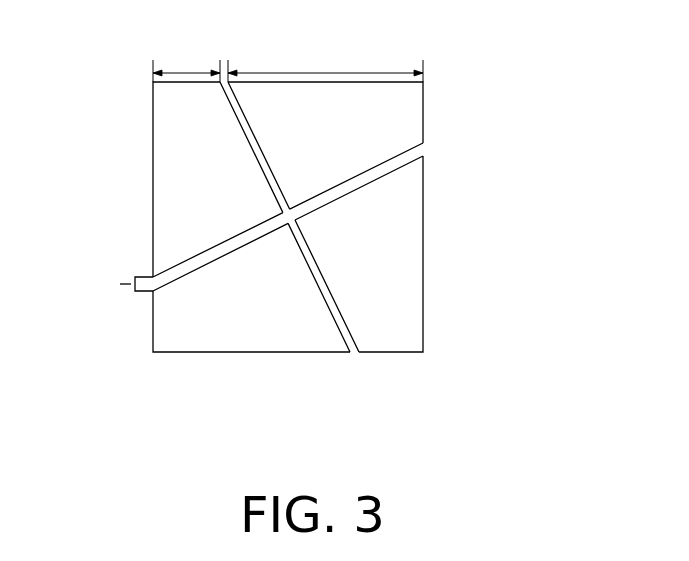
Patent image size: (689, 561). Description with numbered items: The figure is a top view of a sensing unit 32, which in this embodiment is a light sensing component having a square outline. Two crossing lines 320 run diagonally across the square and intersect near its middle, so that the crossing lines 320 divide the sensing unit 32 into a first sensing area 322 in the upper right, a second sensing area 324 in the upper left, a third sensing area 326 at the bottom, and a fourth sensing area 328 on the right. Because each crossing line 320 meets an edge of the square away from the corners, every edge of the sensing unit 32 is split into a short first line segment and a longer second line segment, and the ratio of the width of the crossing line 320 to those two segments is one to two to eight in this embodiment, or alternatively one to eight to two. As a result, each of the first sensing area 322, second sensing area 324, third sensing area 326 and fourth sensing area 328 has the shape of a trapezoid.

The sensing unit 32 is at (307, 223).
The crossing lines 320 is at (380, 172).
The first sensing area 322 is at (394, 108).
The second sensing area 324 is at (176, 232).
The third sensing area 326 is at (282, 340).
The fourth sensing area 328 is at (395, 312).